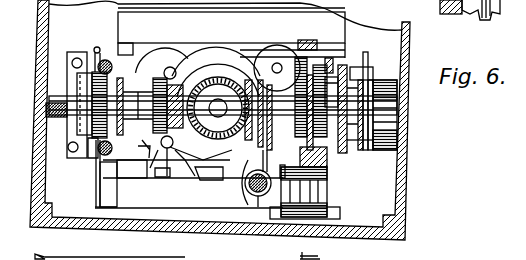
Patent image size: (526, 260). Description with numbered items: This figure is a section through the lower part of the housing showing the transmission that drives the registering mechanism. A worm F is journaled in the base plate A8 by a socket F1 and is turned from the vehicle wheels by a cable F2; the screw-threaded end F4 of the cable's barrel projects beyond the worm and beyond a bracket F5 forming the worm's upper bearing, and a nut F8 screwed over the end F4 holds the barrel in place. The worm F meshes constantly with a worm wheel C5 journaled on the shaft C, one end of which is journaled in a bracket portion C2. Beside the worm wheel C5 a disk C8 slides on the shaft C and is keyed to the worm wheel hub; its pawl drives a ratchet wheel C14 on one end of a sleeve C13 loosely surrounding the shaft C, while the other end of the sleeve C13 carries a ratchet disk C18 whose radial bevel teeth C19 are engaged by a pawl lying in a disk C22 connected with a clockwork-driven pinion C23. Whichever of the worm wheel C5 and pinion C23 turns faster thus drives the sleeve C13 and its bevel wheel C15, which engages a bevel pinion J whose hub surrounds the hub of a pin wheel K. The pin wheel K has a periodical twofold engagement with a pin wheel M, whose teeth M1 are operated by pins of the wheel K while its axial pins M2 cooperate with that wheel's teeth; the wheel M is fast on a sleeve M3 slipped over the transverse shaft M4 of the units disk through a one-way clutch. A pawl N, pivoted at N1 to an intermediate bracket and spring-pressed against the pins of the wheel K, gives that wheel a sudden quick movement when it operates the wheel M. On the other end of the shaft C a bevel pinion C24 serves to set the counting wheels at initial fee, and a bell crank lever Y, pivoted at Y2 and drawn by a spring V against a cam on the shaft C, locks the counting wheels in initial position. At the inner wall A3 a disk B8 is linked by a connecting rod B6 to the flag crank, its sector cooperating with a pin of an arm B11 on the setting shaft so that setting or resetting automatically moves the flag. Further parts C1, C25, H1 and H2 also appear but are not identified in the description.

The inner wall A3 is at (46, 127).
The base plate A8 is at (214, 226).
The connecting rod B6 is at (330, 71).
The disk B8 is at (373, 128).
The arm B11 is at (352, 143).
The shaft C is at (337, 109).
The block C1 is at (345, 163).
The bracket portion C2 is at (92, 127).
The worm wheel C5 is at (325, 83).
The disk C8 is at (294, 137).
The sleeve C13 is at (213, 102).
The ratchet wheel C14 is at (258, 136).
The bevel wheel C15 is at (248, 60).
The ratchet disk C18 is at (204, 68).
The bevel teeth C19 is at (272, 92).
The disk C22 is at (188, 66).
The pinion C23 is at (86, 156).
The bevel pinion C24 is at (114, 97).
The collar C25 is at (325, 93).
The worm F is at (330, 66).
The socket F1 is at (328, 192).
The cable F2 is at (475, 13).
The screw-threaded end F4 is at (300, 44).
The bracket F5 is at (308, 61).
The nut F8 is at (310, 53).
The disk H1 is at (129, 102).
The collar H2 is at (138, 99).
The bevel pinion J is at (228, 66).
The pin wheel K is at (220, 86).
The pin wheel M is at (160, 156).
The teeth M1 is at (189, 184).
The pins M2 is at (133, 148).
The sleeve M3 is at (185, 145).
The transverse shaft M4 is at (173, 172).
The pawl N is at (246, 186).
The pivot N1 is at (260, 196).
The spring V is at (96, 47).
The bell crank lever Y is at (95, 152).
The pivot Y2 is at (95, 188).